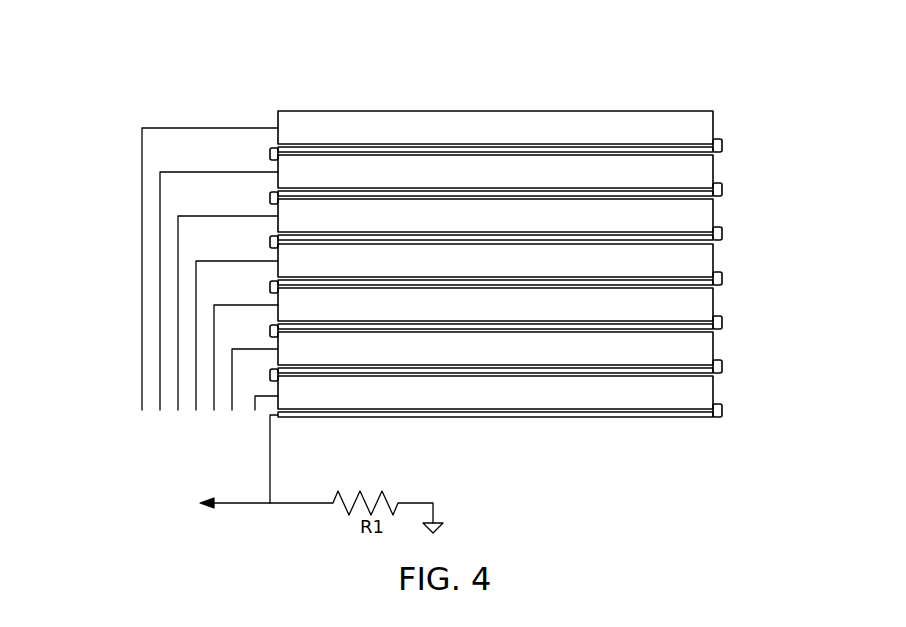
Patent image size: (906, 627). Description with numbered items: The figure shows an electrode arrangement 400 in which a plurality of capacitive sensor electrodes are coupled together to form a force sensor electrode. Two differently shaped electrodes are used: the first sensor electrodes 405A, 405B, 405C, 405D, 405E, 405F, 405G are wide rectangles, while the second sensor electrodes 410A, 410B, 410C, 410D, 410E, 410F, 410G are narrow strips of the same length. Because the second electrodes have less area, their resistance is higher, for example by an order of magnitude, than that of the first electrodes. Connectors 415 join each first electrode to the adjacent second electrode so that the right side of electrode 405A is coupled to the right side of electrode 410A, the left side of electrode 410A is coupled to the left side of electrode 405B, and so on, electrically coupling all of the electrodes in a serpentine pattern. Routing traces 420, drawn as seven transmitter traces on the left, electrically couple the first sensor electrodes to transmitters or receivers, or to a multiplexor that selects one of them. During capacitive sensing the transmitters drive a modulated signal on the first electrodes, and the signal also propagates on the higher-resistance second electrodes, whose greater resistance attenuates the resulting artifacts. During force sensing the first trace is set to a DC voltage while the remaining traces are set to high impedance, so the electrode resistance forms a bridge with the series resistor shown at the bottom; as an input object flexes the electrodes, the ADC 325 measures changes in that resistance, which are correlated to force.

The electrode arrangement 400 is at (124, 95).
The routing traces 420 is at (278, 106).
The first sensor electrode 405A is at (715, 120).
The first sensor electrode 405B is at (715, 166).
The first sensor electrode 405C is at (715, 210).
The first sensor electrode 405D is at (715, 260).
The first sensor electrode 405E is at (715, 303).
The first sensor electrode 405F is at (716, 351).
The first sensor electrode 405G is at (716, 395).
The second sensor electrode 410A is at (721, 152).
The second sensor electrode 410B is at (721, 196).
The second sensor electrode 410C is at (721, 241).
The second sensor electrode 410D is at (721, 286).
The second sensor electrode 410E is at (721, 331).
The second sensor electrode 410F is at (719, 376).
The second sensor electrode 410G is at (708, 418).
The connectors 415 is at (270, 155).
The ADC 325 is at (177, 465).